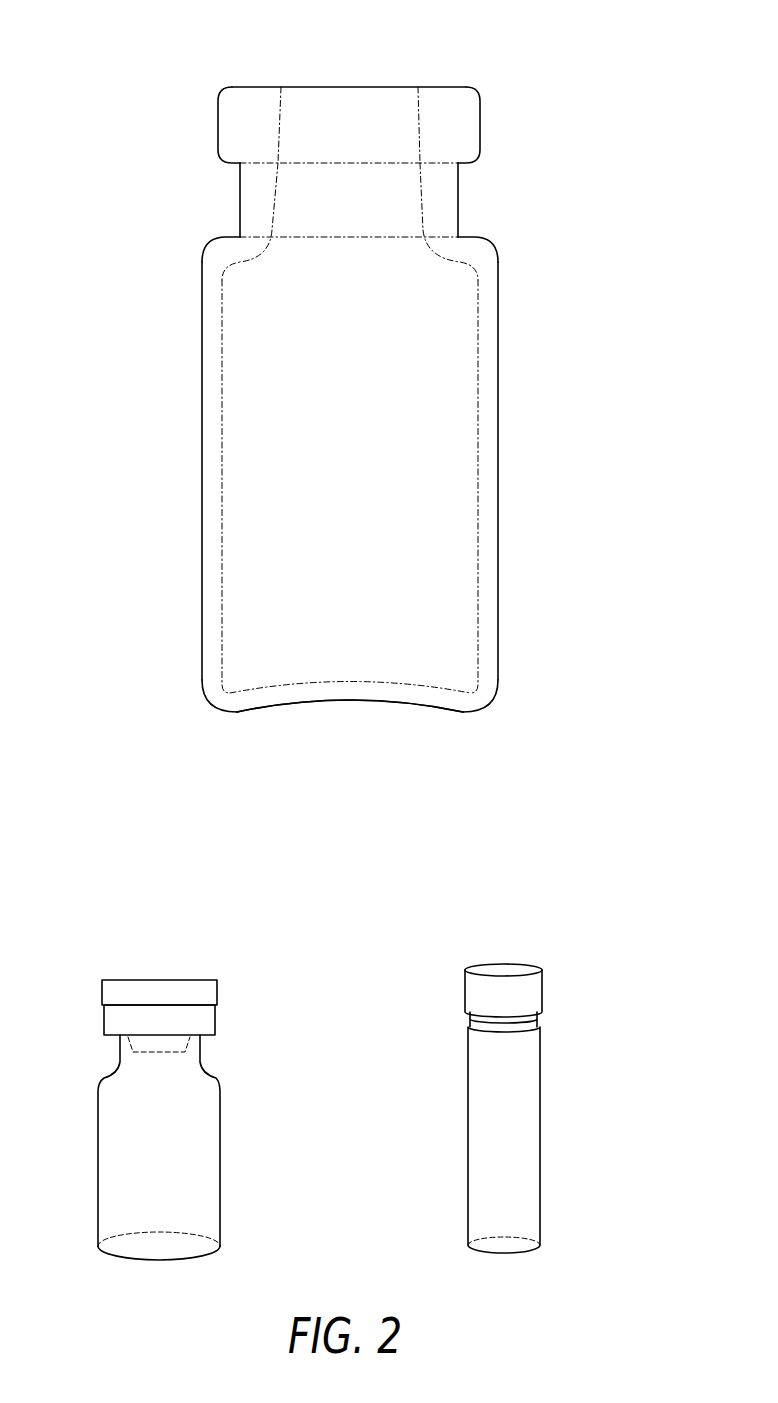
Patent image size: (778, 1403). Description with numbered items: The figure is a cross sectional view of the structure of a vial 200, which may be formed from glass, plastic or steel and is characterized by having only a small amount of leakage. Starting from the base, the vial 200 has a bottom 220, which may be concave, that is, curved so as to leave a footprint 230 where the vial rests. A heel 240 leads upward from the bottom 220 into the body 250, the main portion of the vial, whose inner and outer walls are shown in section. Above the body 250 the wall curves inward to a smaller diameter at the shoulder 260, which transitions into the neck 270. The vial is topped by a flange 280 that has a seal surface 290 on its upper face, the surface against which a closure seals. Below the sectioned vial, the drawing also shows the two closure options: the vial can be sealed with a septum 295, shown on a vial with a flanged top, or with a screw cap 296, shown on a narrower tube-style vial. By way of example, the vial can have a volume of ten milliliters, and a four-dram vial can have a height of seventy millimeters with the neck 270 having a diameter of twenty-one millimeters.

The vial 200 is at (105, 448).
The bottom 220 is at (440, 735).
The footprint 230 is at (488, 737).
The heel 240 is at (486, 737).
The body 250 is at (518, 672).
The shoulder 260 is at (467, 232).
The neck 270 is at (467, 163).
The flange 280 is at (490, 87).
The seal surface 290 is at (467, 80).
The septum 295 is at (218, 993).
The screw cap 296 is at (542, 990).